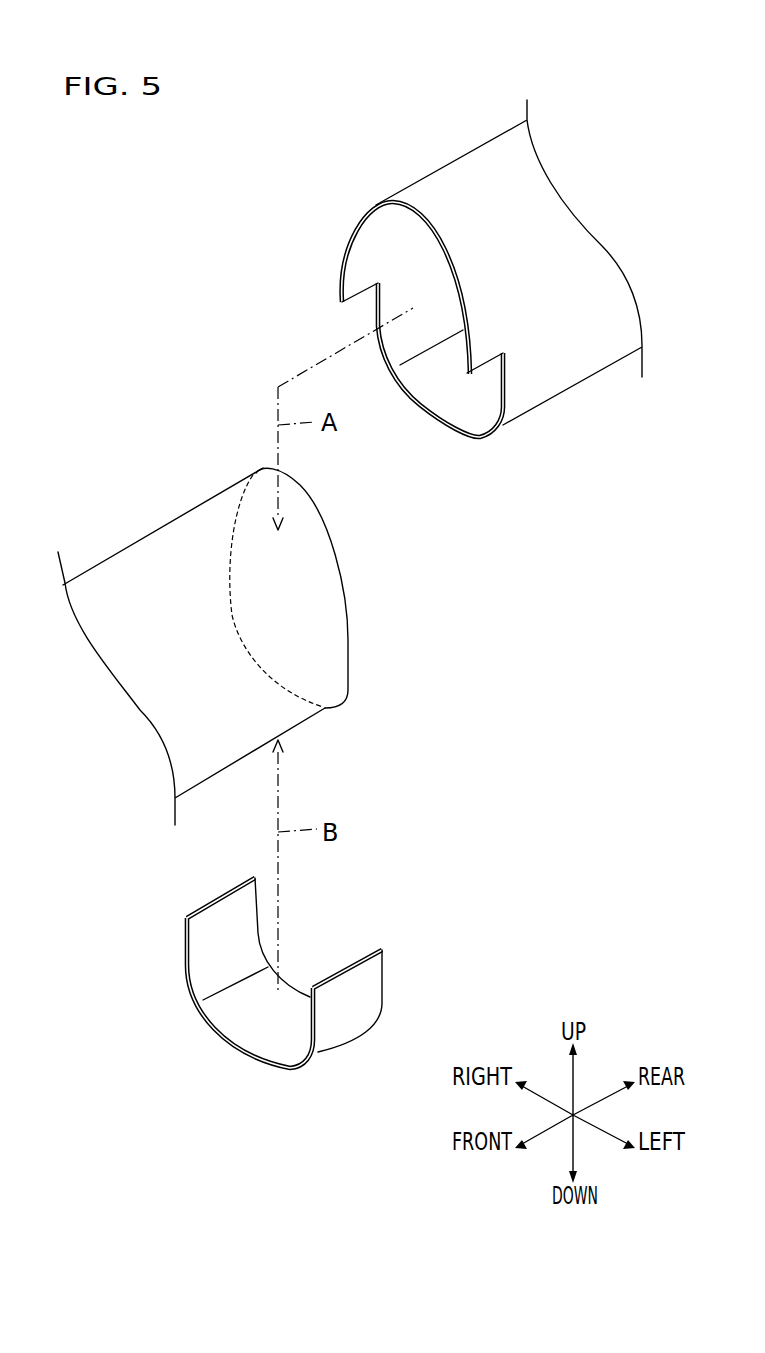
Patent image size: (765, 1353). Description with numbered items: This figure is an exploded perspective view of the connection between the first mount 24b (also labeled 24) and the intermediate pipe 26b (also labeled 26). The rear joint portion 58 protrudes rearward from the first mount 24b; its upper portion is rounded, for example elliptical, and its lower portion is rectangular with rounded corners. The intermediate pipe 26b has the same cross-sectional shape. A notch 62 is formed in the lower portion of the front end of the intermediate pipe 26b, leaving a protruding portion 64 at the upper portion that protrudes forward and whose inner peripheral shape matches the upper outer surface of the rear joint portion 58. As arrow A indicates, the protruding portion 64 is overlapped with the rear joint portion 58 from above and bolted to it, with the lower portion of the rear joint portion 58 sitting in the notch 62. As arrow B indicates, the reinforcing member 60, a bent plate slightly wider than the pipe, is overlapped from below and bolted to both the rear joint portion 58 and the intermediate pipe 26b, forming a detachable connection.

The second band member 26 is at (456, 262).
The intermediate pipe 26b is at (456, 262).
The protruding portion 64 is at (418, 202).
The notch 62 is at (356, 317).
The first band member 24 is at (235, 642).
The first mount 24b is at (235, 642).
The rear joint portion 58 is at (327, 640).
The reinforcing member 60 is at (360, 990).